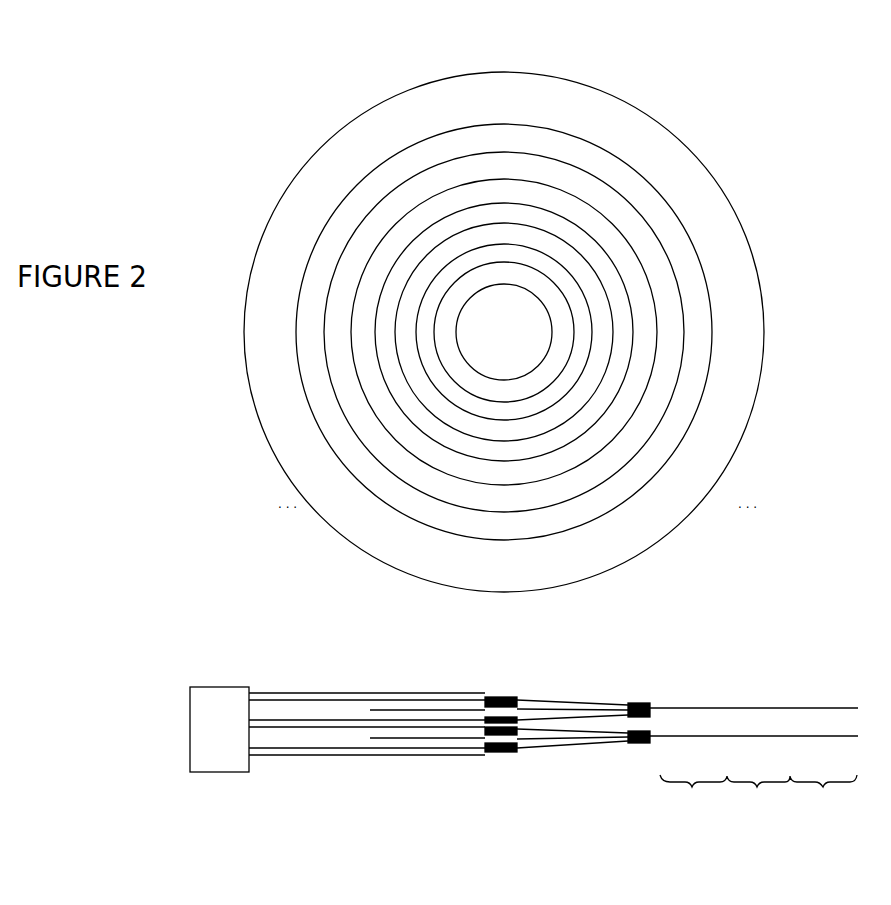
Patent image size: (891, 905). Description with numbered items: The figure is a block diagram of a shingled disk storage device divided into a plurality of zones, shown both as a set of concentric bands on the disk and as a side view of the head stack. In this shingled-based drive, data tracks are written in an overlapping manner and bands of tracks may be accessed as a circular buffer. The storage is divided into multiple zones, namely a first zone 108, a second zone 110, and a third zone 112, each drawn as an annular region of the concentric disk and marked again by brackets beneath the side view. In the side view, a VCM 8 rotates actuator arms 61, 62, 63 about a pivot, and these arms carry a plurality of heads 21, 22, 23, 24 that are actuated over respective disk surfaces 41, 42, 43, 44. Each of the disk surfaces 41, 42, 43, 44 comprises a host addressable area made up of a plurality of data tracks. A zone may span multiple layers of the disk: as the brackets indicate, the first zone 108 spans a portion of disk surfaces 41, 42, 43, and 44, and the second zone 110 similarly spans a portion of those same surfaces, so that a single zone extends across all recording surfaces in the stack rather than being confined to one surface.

The zone 1 108 is at (568, 140).
The zone 2 110 is at (522, 172).
The zone 3 112 is at (557, 208).
The VCM 8 is at (218, 687).
The actuator arm 61 is at (292, 693).
The actuator arm 62 is at (327, 720).
The actuator arm 63 is at (358, 748).
The head 21 is at (634, 703).
The head 22 is at (627, 703).
The head 23 is at (628, 743).
The head 24 is at (645, 743).
The disk surface 41 is at (766, 706).
The disk surface 42 is at (800, 708).
The disk surface 43 is at (807, 736).
The disk surface 44 is at (808, 737).